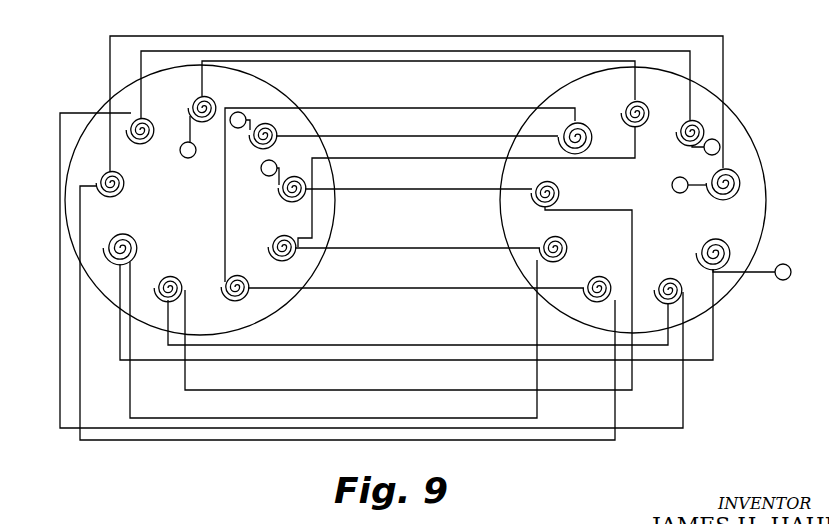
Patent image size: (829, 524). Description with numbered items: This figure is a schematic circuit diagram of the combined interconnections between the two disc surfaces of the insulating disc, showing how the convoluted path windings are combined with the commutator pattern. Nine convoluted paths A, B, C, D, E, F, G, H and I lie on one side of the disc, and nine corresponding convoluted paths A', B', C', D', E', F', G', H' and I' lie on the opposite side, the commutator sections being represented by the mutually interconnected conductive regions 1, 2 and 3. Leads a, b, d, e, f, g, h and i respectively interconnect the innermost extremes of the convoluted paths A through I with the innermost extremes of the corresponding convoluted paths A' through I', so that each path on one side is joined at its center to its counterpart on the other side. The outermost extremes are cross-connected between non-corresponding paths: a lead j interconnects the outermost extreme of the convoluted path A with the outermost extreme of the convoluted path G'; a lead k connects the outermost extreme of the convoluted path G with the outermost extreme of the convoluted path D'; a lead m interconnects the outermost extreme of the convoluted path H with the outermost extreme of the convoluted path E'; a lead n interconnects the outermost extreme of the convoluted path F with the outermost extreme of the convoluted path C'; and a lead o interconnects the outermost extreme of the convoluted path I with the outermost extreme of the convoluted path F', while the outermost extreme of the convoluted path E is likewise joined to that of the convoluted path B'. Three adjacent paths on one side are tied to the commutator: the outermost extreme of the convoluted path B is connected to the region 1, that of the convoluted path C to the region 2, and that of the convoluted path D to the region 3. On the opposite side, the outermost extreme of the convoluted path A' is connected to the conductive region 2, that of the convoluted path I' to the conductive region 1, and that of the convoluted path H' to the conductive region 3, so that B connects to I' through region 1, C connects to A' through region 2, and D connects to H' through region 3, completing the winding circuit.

The convoluted path A is at (141, 148).
The convoluted path B is at (202, 130).
The convoluted path C is at (256, 148).
The convoluted path D is at (280, 192).
The convoluted path E is at (266, 245).
The convoluted path F is at (225, 280).
The convoluted path G is at (168, 272).
The convoluted path H is at (129, 242).
The convoluted path I is at (117, 192).
The convoluted path A' is at (682, 121).
The convoluted path B' is at (623, 105).
The convoluted path C' is at (589, 138).
The convoluted path D' is at (560, 186).
The convoluted path E' is at (566, 240).
The convoluted path F' is at (598, 274).
The convoluted path G' is at (668, 276).
The convoluted path H' is at (735, 247).
The convoluted path I' is at (716, 172).
The conductive region of the commutator pattern 1 is at (434, 167).
The conductive region of the commutator pattern 2 is at (475, 133).
The conductive region of the commutator pattern 3 is at (526, 220).
The lead a is at (140, 68).
The lead b is at (371, 62).
The lead d is at (428, 191).
The lead e is at (430, 247).
The lead f is at (415, 289).
The lead g is at (457, 344).
The lead h is at (350, 361).
The lead i is at (110, 83).
The lead j is at (59, 272).
The lead k is at (406, 391).
The lead m is at (185, 417).
The lead n is at (454, 108).
The lead o is at (150, 441).